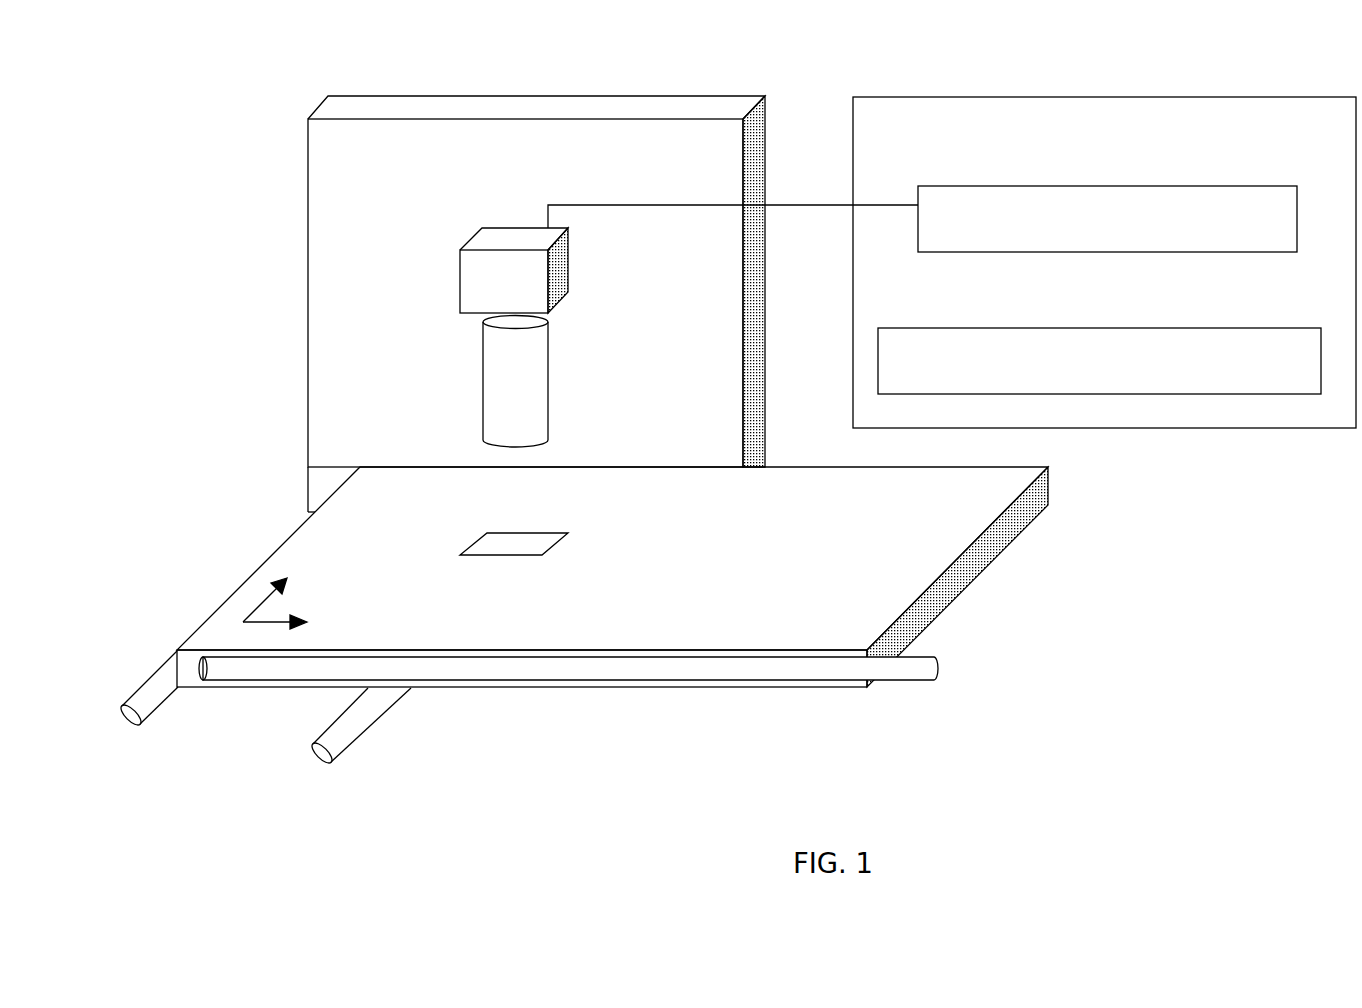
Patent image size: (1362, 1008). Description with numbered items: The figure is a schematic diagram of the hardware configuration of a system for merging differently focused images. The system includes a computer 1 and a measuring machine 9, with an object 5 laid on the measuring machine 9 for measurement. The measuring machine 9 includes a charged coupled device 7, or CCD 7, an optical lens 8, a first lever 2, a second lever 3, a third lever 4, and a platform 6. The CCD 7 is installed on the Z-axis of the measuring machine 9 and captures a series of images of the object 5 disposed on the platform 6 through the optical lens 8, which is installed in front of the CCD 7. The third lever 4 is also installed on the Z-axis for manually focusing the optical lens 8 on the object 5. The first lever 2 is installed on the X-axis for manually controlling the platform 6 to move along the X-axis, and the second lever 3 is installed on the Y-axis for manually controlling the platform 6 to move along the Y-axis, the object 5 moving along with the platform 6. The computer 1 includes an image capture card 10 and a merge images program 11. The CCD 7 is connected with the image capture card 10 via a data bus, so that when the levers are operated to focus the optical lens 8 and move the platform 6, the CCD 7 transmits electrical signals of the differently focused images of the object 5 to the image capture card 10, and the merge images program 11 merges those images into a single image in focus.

The computer 1 is at (1117, 97).
The first lever 2 is at (938, 668).
The second lever 3 is at (350, 752).
The third lever 4 is at (155, 707).
The object 5 is at (568, 533).
The platform 6 is at (1045, 512).
The charged coupled device 7 is at (460, 250).
The optical lens 8 is at (548, 402).
The measuring machine 9 is at (308, 203).
The image capture card 10 is at (1169, 186).
The merge images program 11 is at (1249, 328).